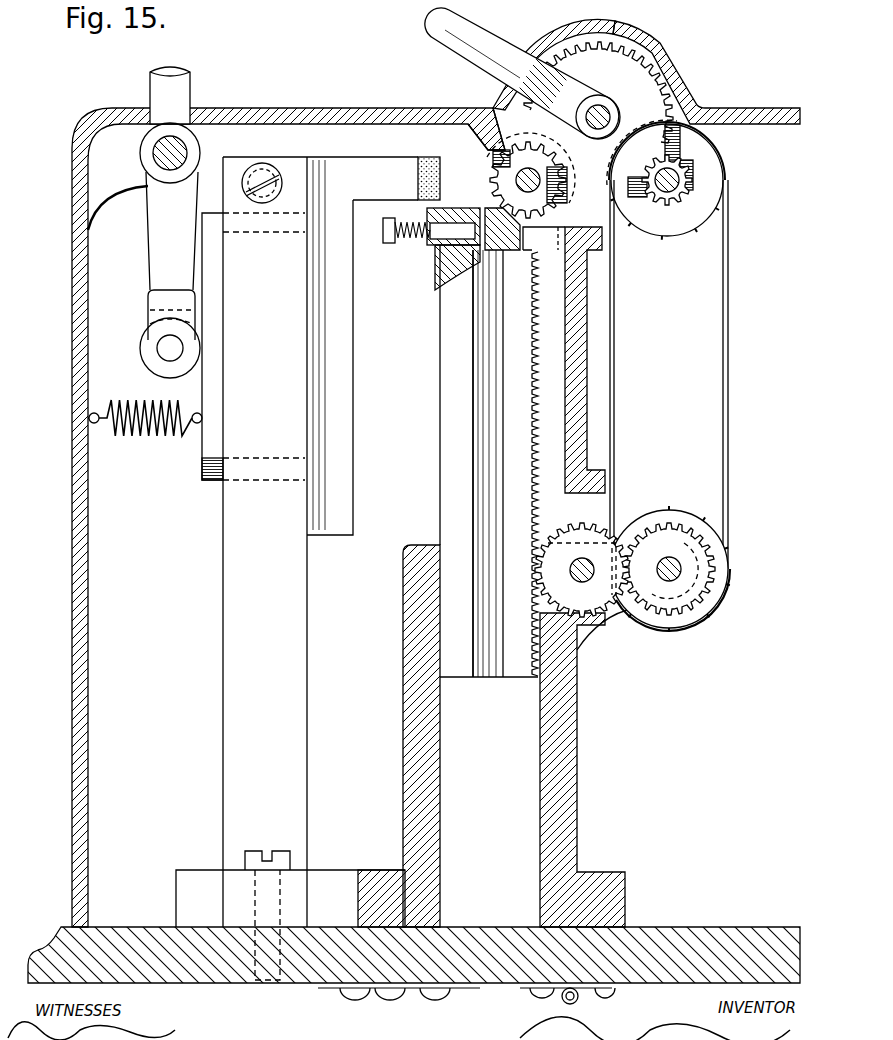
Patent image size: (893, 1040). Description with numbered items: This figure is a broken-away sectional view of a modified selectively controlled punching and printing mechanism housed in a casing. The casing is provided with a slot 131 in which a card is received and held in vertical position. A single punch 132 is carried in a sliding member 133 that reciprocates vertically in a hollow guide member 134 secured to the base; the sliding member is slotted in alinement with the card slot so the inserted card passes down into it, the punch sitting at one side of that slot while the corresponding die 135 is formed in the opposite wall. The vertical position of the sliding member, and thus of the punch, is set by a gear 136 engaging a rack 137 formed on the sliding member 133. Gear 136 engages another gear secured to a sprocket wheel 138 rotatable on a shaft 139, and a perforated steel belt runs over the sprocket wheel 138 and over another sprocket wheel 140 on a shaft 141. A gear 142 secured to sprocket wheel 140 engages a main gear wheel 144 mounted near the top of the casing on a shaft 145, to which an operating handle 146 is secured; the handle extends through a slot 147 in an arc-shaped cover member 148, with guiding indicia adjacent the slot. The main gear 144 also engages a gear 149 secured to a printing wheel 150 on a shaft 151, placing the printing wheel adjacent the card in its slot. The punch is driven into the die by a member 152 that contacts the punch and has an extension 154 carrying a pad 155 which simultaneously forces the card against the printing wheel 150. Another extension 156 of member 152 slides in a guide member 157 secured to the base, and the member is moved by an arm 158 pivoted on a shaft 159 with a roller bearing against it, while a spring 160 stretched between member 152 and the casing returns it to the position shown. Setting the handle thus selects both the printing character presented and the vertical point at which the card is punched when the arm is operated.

The slot 131 is at (482, 110).
The punch 132 is at (441, 255).
The sliding member 133 is at (447, 436).
The hollow guide member 134 is at (418, 744).
The die 135 is at (472, 265).
The gear 136 is at (590, 592).
The rack 137 is at (560, 510).
The sprocket wheel 138 is at (702, 533).
The shaft 139 is at (676, 580).
The sprocket wheel 140 is at (708, 165).
The shaft 141 is at (672, 183).
The gear 142 is at (668, 192).
The main gear wheel 144 is at (635, 100).
The shaft 145 is at (600, 112).
The operating handle 146 is at (436, 25).
The slot 147 is at (658, 52).
The arc-shaped cover member 148 is at (563, 30).
The gear 149 is at (498, 170).
The printing wheel 150 is at (499, 197).
The shaft 151 is at (542, 186).
The member 152 is at (332, 362).
The extension 154 is at (372, 175).
The pad 155 is at (428, 165).
The extension 156 is at (213, 434).
The guide member 157 is at (290, 568).
The arm 158 is at (165, 258).
The shaft 159 is at (162, 146).
The spring 160 is at (120, 438).